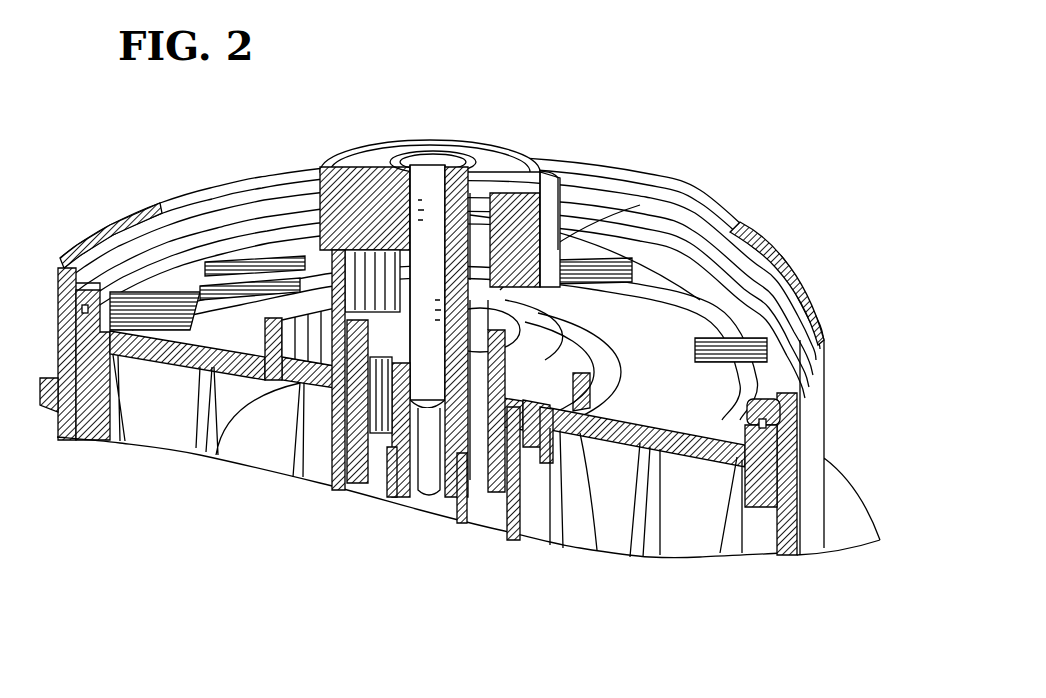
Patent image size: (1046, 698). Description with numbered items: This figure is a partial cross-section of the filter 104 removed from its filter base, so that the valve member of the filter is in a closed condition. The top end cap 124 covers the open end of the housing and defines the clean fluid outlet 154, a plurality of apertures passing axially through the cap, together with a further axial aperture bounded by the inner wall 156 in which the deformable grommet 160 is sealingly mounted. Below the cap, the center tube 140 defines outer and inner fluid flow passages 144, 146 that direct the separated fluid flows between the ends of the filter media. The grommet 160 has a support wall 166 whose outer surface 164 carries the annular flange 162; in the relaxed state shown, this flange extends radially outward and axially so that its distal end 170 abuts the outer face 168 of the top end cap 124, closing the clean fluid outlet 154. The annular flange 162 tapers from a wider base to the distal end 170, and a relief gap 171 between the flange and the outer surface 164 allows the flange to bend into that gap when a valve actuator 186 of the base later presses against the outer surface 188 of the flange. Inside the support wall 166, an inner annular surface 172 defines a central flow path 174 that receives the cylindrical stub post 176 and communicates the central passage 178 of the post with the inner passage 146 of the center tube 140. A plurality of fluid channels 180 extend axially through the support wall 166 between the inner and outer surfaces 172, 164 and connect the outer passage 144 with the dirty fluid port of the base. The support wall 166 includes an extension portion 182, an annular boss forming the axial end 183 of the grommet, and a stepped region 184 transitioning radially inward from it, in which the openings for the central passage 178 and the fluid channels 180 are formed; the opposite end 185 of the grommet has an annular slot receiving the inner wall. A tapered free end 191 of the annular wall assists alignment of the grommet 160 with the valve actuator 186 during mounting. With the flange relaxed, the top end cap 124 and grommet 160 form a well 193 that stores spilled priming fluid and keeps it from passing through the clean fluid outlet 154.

The filter 104 is at (838, 413).
The top end cap 124 is at (835, 470).
The center tube 140 is at (325, 462).
The outer fluid flow passage 144 is at (503, 520).
The inner fluid flow passage 146 is at (447, 512).
The clean fluid outlet 154 is at (213, 447).
The inner wall 156 is at (520, 463).
The grommet 160 is at (757, 248).
The annular flange 162 is at (545, 342).
The outer surface 164 is at (592, 293).
The support wall 166 is at (567, 427).
The outer face 168 is at (764, 279).
The distal end 170 is at (572, 408).
The relief gap 171 is at (333, 430).
The inner annular surface 172 is at (425, 487).
The central flow path 174 is at (420, 495).
The cylindrical stub post 176 is at (640, 198).
The central passage 178 is at (424, 178).
The fluid channels 180 is at (393, 288).
The extension portion 182 is at (705, 231).
The axial end 183 is at (558, 335).
The stepped region 184 is at (383, 295).
The end 185 is at (495, 510).
The valve actuator 186 is at (480, 153).
The outer surface 188 is at (565, 395).
The tapered free end 191 is at (152, 296).
The well 193 is at (325, 308).